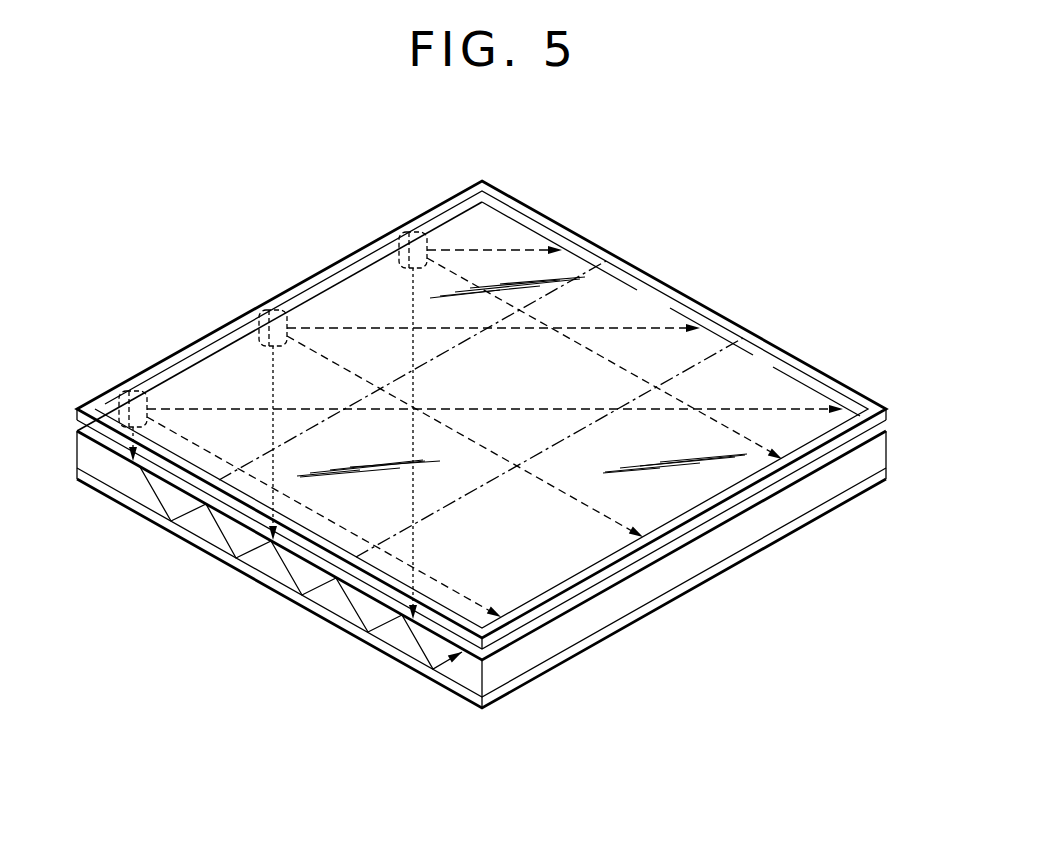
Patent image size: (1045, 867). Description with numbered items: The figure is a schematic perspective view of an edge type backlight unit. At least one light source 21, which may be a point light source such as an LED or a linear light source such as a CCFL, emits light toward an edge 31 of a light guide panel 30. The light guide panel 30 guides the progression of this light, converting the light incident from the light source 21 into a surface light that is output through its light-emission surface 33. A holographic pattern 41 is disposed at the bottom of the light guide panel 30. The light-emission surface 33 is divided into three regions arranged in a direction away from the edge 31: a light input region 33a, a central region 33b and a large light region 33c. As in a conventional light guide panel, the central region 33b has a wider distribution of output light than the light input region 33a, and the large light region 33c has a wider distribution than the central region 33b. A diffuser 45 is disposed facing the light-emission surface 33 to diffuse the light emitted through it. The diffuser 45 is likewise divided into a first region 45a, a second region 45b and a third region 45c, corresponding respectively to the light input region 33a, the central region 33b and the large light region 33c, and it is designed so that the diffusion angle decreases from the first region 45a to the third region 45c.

The light source 21 is at (137, 391).
The light guide panel 30 is at (738, 540).
The edge 31 is at (76, 423).
The light-emission surface 33 is at (366, 586).
The light input region 33a is at (122, 507).
The central region 33b is at (254, 564).
The large light region 33c is at (384, 641).
The holographic pattern 41 is at (683, 598).
The diffuser 45 is at (491, 397).
The first region 45a is at (559, 228).
The second region 45b is at (690, 298).
The third region 45c is at (823, 367).